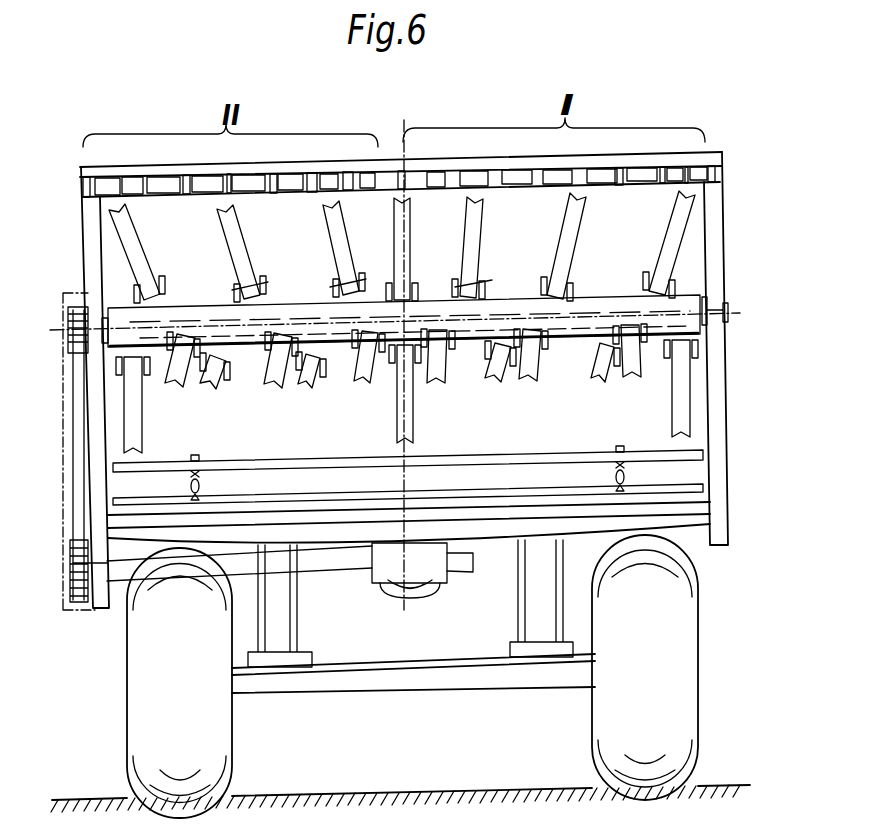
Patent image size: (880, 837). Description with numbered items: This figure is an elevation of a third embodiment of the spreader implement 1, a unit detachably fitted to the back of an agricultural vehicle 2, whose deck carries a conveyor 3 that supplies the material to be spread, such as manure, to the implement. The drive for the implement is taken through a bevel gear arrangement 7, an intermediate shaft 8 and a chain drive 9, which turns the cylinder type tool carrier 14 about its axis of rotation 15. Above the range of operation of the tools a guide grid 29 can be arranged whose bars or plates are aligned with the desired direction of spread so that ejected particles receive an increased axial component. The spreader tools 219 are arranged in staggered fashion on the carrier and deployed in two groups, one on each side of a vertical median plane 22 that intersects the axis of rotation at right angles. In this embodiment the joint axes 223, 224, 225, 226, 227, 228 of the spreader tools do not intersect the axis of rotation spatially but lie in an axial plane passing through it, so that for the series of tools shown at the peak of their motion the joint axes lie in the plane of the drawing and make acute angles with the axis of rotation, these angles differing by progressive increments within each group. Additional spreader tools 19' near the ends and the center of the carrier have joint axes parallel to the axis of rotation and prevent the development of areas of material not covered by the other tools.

The spreader implement 1 is at (730, 441).
The agricultural vehicle 2 is at (670, 513).
The conveyor 3 is at (546, 476).
The bevel gear arrangement 7 is at (400, 587).
The intermediate shaft 8 is at (353, 573).
The chain drive 9 is at (64, 476).
The cylinder type tool carrier 14 is at (653, 330).
The axis of rotation 15 is at (672, 314).
The additional spreader tools 19' is at (294, 401).
The vertical median plane 22 is at (407, 493).
The guide grid 29 is at (438, 176).
The spreader tools 219 is at (330, 220).
The joint axis 223 is at (190, 280).
The joint axis 224 is at (282, 280).
The joint axis 225 is at (378, 288).
The joint axis 226 is at (470, 348).
The joint axis 227 is at (497, 272).
The joint axis 228 is at (598, 262).